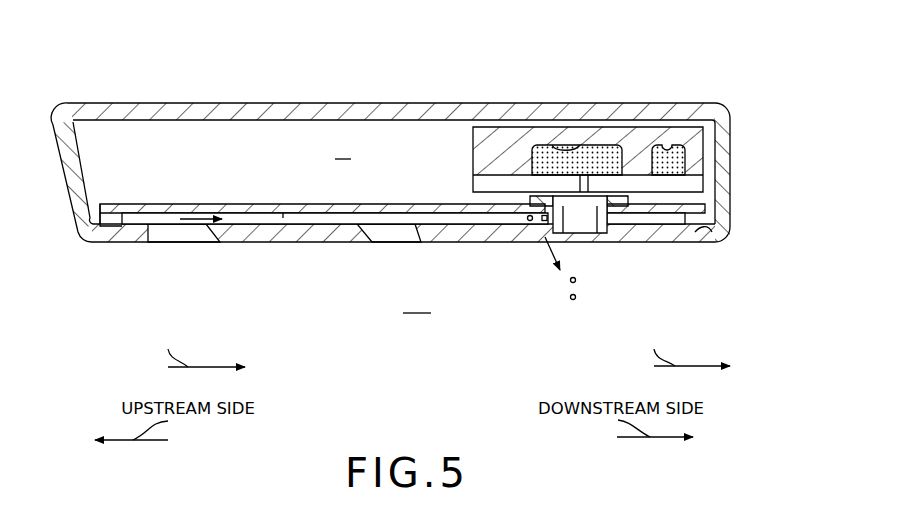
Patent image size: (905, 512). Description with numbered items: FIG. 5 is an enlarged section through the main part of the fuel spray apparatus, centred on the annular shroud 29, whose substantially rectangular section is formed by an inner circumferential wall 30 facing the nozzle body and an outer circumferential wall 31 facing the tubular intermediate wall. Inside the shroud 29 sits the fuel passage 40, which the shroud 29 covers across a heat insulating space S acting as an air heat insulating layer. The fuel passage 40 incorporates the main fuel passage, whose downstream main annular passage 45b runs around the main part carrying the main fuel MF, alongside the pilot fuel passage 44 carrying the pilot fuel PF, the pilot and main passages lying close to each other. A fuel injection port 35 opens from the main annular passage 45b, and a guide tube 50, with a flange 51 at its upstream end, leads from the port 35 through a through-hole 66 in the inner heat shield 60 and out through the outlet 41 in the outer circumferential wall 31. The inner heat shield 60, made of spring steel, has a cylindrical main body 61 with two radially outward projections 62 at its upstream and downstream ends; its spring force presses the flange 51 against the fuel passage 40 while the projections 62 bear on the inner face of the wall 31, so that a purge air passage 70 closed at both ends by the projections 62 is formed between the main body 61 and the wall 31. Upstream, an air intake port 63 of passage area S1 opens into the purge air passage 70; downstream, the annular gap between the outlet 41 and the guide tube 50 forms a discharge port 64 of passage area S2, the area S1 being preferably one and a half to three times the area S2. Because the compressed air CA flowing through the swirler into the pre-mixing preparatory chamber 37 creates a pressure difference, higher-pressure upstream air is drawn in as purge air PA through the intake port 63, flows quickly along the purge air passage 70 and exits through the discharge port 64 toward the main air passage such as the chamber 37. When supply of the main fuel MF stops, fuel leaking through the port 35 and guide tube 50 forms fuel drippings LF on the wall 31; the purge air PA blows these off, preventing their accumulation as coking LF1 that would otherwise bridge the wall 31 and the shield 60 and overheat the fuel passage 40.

The shroud 29 is at (411, 159).
The inner circumferential wall 30 is at (108, 103).
The outer circumferential wall 31 is at (287, 243).
The main annular passage 45b is at (555, 146).
The fuel passage 40 is at (589, 146).
The flange 51 is at (636, 203).
The pilot fuel passage 44 is at (667, 145).
The inner heat shield 60 is at (134, 204).
The cylindrical main body 61 is at (240, 204).
The purge air passage 70 is at (283, 213).
The fuel injection port 35 is at (580, 186).
The projection 62 is at (100, 243).
The air intake port 63 is at (152, 243).
The discharge port 64 is at (534, 243).
The through-hole 66 is at (587, 240).
The guide tube 50 is at (610, 243).
The outlet 41 is at (604, 243).
The pre-mixing preparatory chamber 37 is at (417, 303).
The purge air PA is at (170, 262).
The fuel drippings LF is at (527, 218).
The coking LF1 is at (670, 233).
The main fuel MF is at (533, 160).
The passage flow PF is at (675, 168).
The heat insulating space S is at (343, 150).
The passage area of air intake port S1 is at (197, 243).
The passage area of discharge port S2 is at (533, 235).
The compressed air CA is at (439, 346).